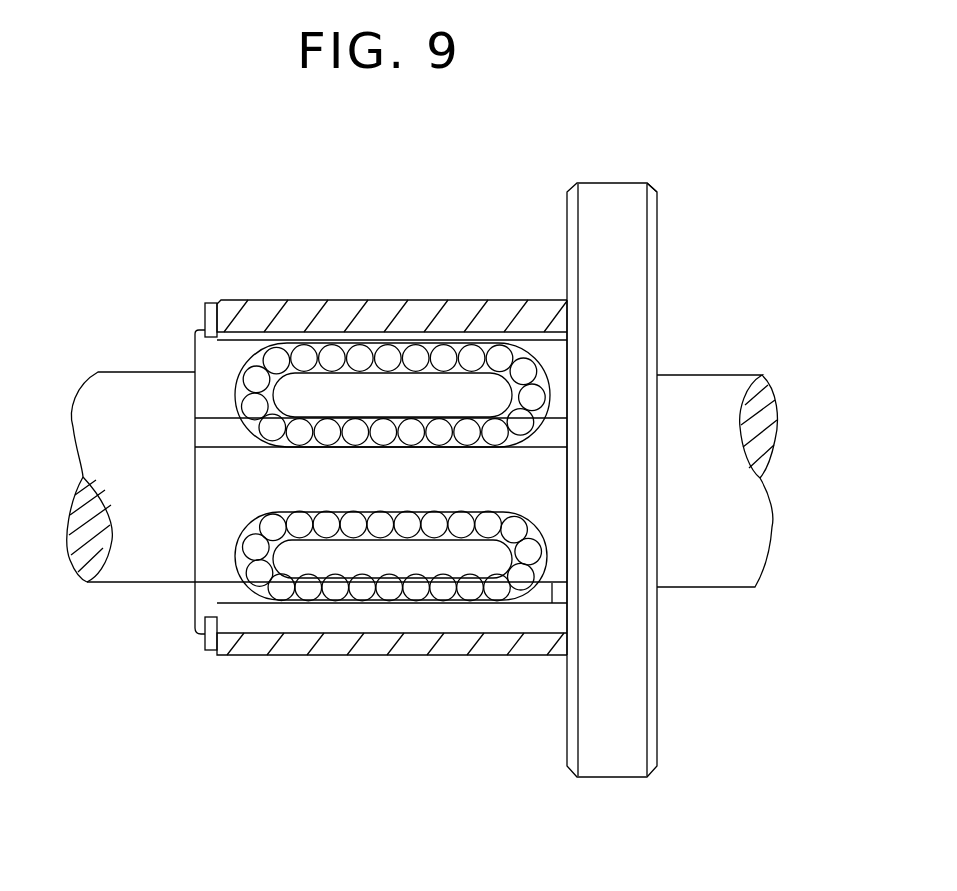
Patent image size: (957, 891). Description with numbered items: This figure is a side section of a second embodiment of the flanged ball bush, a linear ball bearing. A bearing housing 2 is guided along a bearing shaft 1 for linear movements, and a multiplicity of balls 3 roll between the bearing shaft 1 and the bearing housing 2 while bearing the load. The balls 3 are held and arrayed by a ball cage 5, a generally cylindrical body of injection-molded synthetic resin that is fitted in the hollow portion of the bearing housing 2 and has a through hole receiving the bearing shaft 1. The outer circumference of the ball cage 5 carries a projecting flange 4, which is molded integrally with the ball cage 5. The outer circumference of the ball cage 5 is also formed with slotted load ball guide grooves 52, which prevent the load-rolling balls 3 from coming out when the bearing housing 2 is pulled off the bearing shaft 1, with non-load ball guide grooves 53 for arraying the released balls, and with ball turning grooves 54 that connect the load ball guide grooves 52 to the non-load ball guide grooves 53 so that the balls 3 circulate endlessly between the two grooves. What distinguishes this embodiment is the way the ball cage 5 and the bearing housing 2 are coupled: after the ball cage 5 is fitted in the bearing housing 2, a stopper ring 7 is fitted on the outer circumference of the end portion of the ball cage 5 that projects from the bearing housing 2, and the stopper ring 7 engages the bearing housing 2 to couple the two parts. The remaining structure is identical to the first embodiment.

The bearing shaft 1 is at (728, 372).
The bearing housing 2 is at (463, 300).
The balls 3 is at (373, 346).
The flange 4 is at (617, 190).
The ball cage 5 is at (663, 193).
The stopper ring 7 is at (205, 307).
The load ball guide grooves 52 is at (317, 420).
The non-load ball guide grooves 53 is at (423, 352).
The ball turning grooves 54 is at (515, 360).